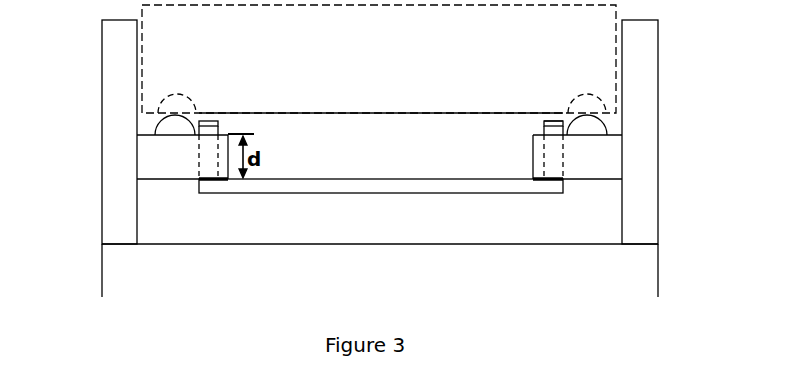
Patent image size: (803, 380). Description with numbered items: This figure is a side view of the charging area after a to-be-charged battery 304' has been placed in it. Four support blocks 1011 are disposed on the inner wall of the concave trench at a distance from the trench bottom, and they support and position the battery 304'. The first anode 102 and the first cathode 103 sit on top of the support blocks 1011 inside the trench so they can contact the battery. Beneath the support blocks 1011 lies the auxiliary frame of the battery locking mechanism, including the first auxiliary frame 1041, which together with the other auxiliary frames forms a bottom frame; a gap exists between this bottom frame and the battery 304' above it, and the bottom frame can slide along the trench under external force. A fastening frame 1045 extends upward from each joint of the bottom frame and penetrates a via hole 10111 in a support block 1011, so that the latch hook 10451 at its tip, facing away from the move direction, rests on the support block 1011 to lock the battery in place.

The support block 1011 is at (180, 176).
The via hole 10111 is at (207, 149).
The first auxiliary frame 1041 is at (371, 188).
The fastening frame 1045 is at (553, 129).
The latch hook 10451 is at (552, 124).
The first anode 102 is at (178, 128).
The first cathode 103 is at (588, 122).
The to-be-charged battery 304' is at (433, 59).